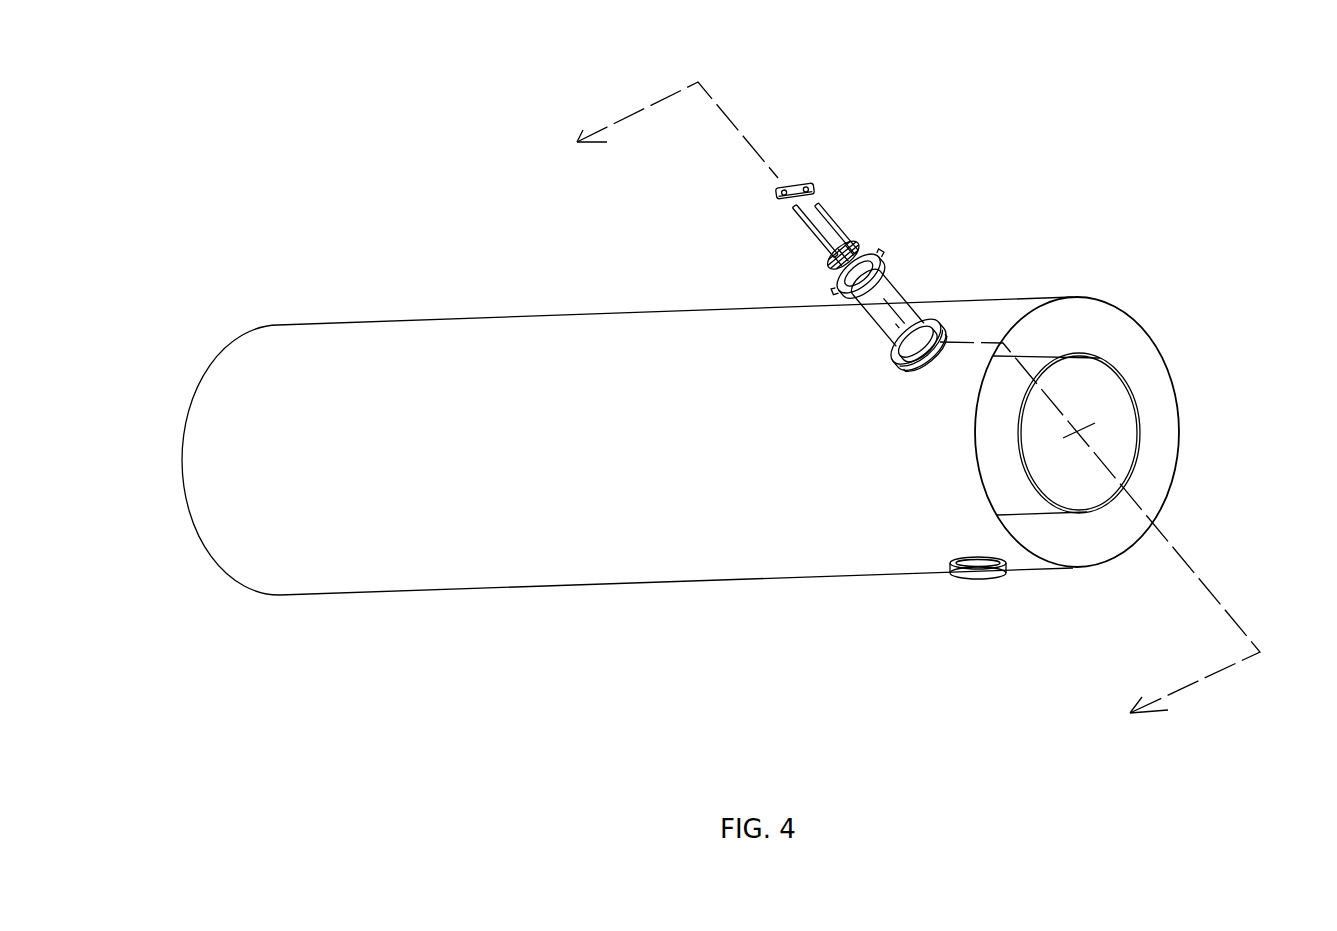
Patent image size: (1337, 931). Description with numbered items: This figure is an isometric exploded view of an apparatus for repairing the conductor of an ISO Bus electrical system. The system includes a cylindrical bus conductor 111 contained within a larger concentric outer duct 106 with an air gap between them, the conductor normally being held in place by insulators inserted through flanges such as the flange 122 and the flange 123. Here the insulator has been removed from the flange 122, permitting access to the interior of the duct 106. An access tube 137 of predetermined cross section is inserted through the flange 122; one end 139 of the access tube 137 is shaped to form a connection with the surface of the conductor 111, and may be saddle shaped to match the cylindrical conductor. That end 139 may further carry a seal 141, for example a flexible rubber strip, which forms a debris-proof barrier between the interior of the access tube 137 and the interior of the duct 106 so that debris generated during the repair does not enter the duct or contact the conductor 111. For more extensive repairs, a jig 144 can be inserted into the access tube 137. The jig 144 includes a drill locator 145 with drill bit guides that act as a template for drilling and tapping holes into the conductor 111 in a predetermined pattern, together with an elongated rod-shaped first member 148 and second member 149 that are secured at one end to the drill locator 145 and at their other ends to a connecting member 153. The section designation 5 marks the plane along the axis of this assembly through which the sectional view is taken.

The section line 5- 5 is at (891, 409).
The duct 106 is at (365, 322).
The conductor 111 is at (1100, 360).
The flange 122 is at (933, 318).
The flange 123 is at (950, 578).
The access tube 137 is at (907, 290).
The end of the access tube 139 is at (875, 325).
The seal 141 is at (937, 308).
The jig 144 is at (857, 233).
The drill locator 145 is at (838, 268).
The first member 148 is at (837, 217).
The second member 149 is at (828, 252).
The connecting member 153 is at (795, 183).